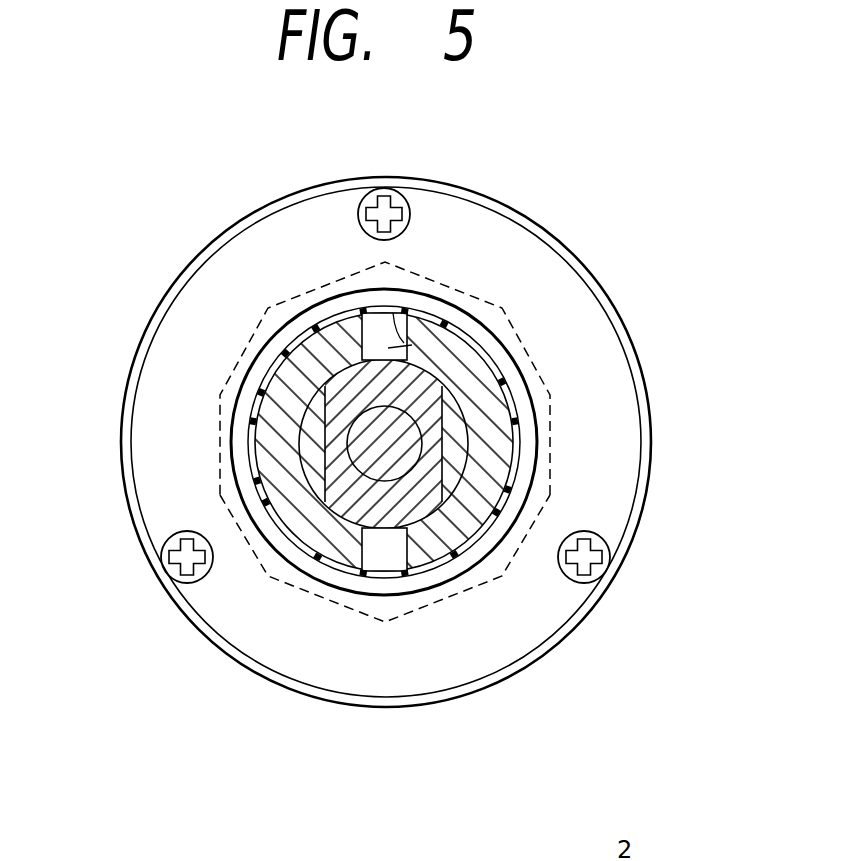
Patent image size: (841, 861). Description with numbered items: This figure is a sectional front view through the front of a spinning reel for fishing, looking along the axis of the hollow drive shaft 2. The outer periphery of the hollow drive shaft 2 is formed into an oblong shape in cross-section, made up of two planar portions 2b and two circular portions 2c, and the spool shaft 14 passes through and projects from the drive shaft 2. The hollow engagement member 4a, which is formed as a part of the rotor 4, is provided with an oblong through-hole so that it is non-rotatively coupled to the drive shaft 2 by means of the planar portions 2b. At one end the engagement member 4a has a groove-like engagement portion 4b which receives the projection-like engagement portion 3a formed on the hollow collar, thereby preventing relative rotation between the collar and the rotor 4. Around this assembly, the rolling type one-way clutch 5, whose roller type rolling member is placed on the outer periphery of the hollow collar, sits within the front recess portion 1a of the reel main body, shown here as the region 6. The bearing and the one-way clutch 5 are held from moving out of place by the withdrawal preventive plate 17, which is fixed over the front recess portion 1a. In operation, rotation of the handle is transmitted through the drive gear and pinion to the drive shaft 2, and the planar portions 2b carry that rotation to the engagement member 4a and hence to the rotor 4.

The front recess portion 1a is at (642, 358).
The withdrawal preventive plate 17 is at (575, 303).
The rolling type one-way clutch 5 is at (567, 430).
The flange recess outline 6 is at (555, 494).
The rotor 4 is at (281, 350).
The hollow engagement member 4a is at (262, 378).
The groove-like engagement portion 4b is at (396, 314).
The projection-like engagement portion 3a is at (376, 318).
The hollow drive shaft 2 is at (320, 457).
The planar portions 2b is at (324, 431).
The circular portions 2c is at (412, 345).
The spool shaft 14 is at (325, 501).